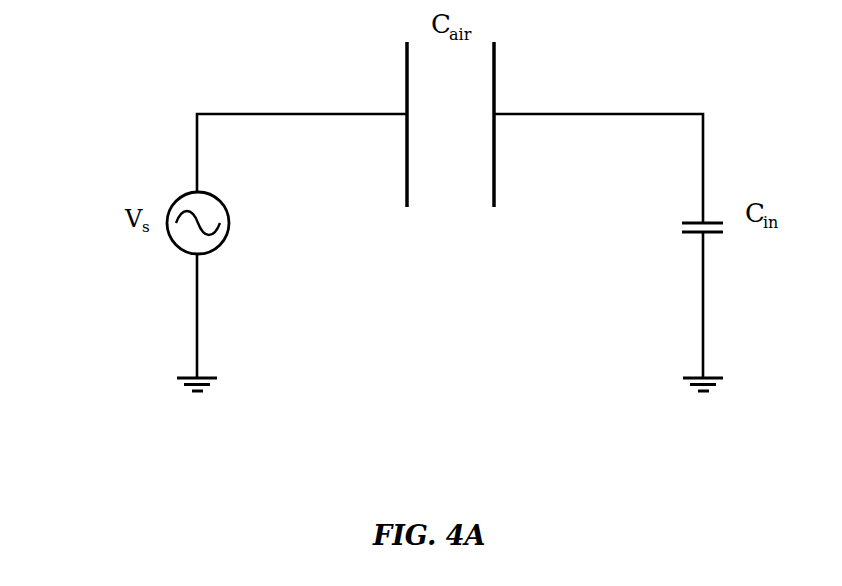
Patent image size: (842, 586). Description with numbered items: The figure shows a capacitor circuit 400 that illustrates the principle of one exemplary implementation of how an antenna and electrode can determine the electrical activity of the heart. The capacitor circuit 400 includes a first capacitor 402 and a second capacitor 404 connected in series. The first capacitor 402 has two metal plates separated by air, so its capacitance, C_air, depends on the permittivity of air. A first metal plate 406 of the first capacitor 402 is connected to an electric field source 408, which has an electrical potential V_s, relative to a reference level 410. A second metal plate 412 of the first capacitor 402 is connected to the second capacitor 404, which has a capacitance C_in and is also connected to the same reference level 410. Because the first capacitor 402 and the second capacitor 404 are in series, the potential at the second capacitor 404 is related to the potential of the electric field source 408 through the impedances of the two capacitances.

The capacitor circuit 400 is at (103, 396).
The first capacitor 402 is at (453, 211).
The second capacitor 404 is at (688, 234).
The first metal plate 406 is at (407, 68).
The electric field source 408 is at (183, 251).
The reference level 410 is at (200, 392).
The second metal plate 412 is at (494, 68).